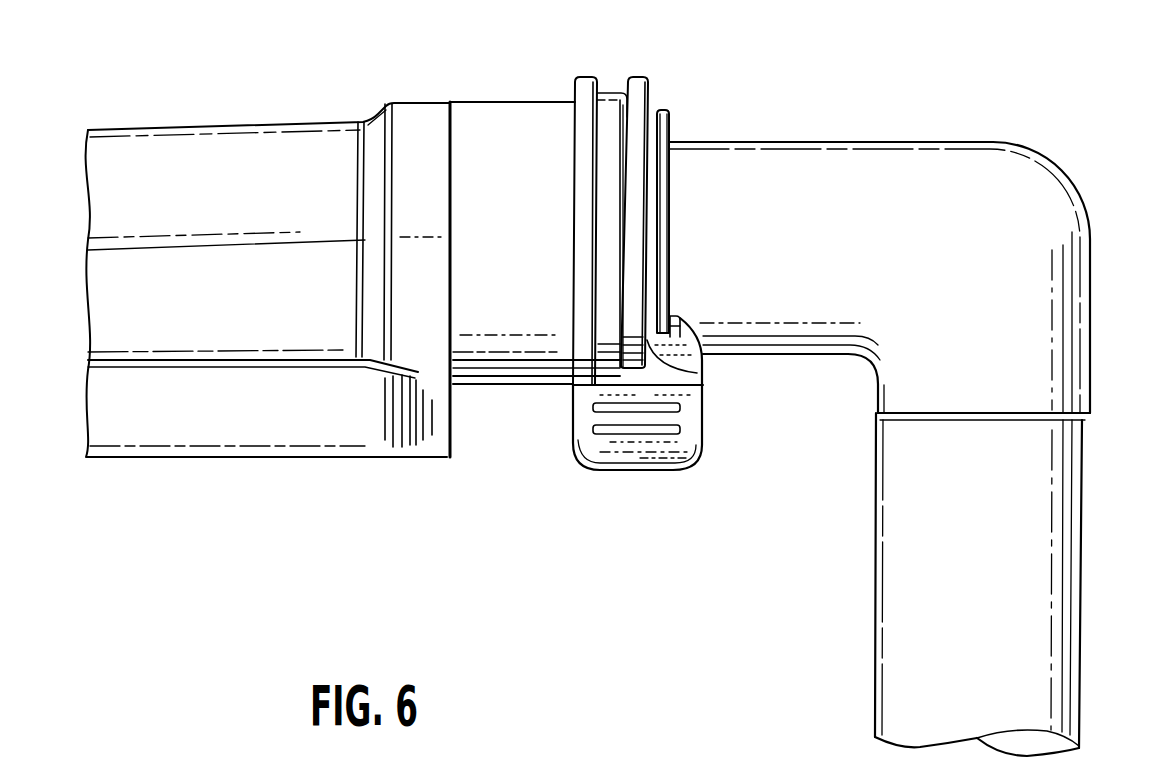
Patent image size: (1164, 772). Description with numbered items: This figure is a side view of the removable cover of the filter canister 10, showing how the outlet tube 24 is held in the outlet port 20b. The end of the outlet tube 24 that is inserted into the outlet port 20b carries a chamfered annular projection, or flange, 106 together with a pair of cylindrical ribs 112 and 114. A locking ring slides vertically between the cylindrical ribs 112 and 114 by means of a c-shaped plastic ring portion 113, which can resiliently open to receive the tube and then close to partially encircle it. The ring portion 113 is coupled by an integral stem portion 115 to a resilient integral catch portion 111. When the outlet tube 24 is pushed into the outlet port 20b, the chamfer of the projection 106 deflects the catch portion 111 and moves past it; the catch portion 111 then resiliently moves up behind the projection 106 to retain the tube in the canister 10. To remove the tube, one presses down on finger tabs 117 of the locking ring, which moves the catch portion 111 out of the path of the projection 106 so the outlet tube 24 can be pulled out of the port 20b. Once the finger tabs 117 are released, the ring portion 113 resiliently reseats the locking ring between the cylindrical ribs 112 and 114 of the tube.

The filter canister 10 is at (620, 473).
The outlet port 20b is at (488, 345).
The outlet tube 24 is at (910, 165).
The chamfered annular projection 106 is at (665, 127).
The catch portion 111 is at (677, 318).
The cylindrical rib 112 is at (635, 87).
The c-shaped plastic ring portion 113 is at (610, 203).
The cylindrical rib 114 is at (588, 87).
The integral stem portion 115 is at (697, 373).
The finger tabs 117 is at (680, 450).